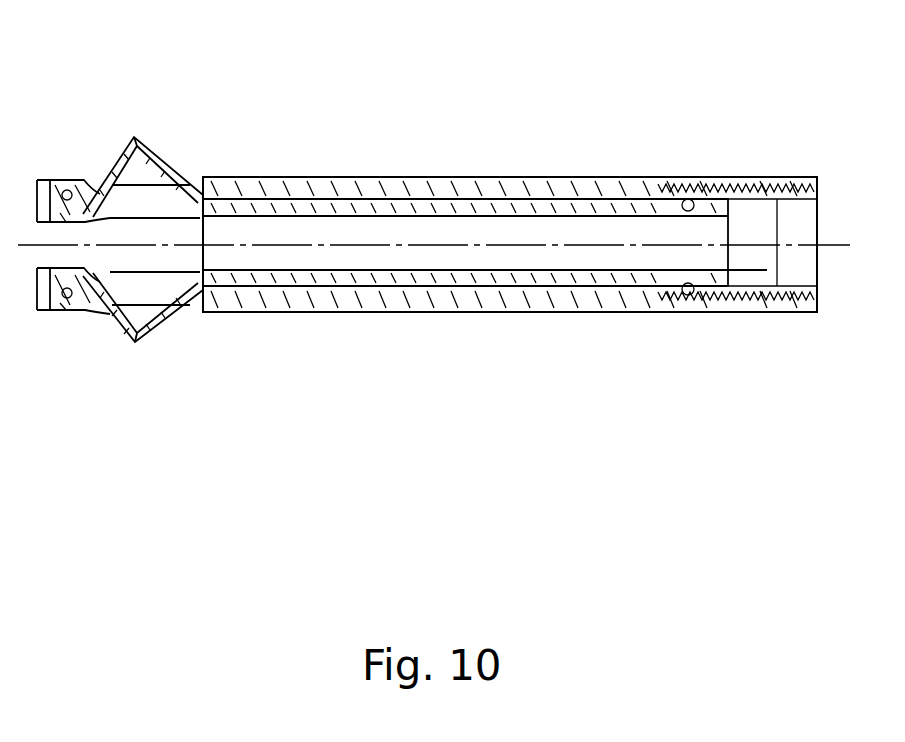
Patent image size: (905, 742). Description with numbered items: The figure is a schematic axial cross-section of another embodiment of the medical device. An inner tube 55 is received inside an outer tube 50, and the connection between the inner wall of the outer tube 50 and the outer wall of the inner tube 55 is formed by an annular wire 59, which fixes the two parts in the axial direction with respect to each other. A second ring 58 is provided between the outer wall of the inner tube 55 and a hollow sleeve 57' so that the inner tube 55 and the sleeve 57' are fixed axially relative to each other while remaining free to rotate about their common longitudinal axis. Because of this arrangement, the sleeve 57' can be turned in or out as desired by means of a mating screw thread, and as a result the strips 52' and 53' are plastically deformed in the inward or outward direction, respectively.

The outer tube 50 is at (449, 182).
The strip 52' is at (156, 363).
The strip 53' is at (164, 126).
The inner tube 55 is at (353, 286).
The hollow sleeve 57' is at (736, 345).
The second ring 58 is at (687, 283).
The annular wire 59 is at (63, 298).